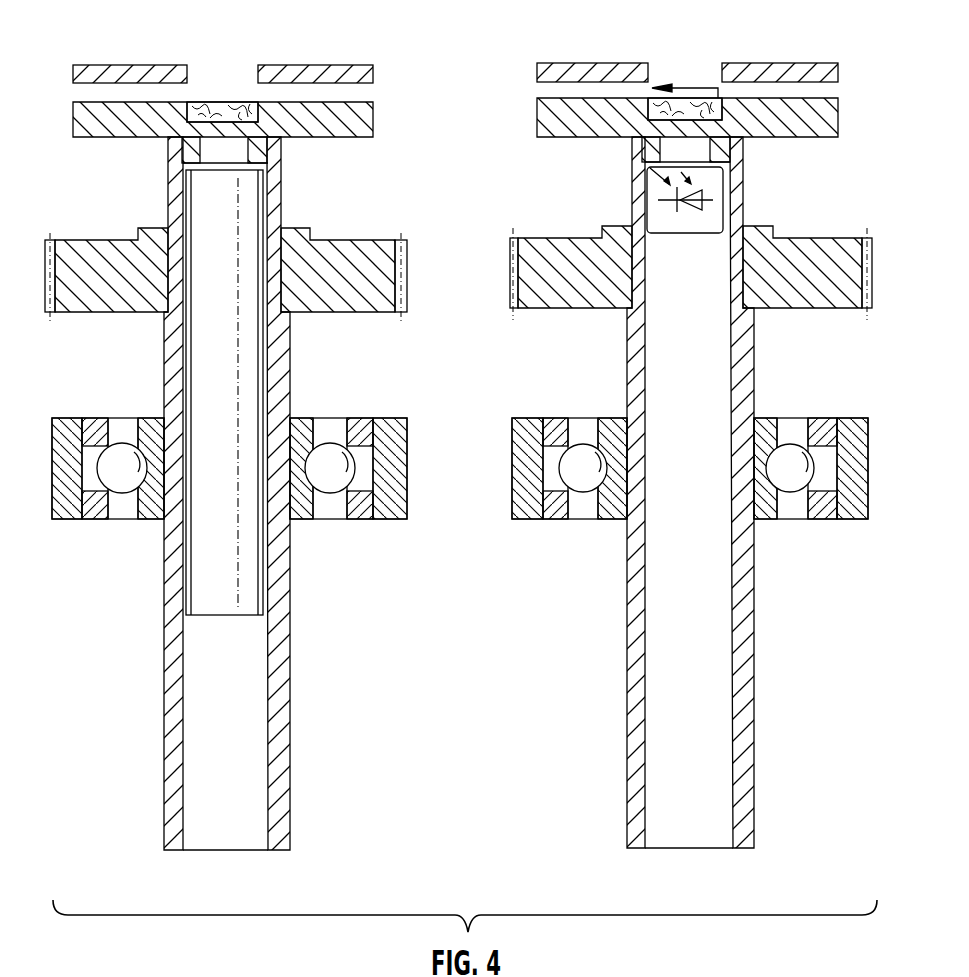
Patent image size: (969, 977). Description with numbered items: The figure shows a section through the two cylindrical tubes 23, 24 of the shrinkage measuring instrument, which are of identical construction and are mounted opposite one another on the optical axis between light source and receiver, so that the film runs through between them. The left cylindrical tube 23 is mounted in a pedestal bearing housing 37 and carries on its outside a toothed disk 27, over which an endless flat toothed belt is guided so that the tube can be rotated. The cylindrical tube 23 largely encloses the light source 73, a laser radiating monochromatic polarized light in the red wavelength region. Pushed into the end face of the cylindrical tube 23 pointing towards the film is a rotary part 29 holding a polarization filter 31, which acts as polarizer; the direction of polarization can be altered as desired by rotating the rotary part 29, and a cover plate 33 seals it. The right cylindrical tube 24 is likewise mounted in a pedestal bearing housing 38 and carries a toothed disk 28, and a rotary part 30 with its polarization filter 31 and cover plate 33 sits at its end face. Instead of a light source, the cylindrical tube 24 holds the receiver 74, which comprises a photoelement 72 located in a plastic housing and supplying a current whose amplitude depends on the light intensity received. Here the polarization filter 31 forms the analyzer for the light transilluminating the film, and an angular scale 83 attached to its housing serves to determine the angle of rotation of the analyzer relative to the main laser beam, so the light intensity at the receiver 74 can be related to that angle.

The cylindrical tube 23 is at (172, 700).
The cylindrical tube 24 is at (637, 672).
The toothed disk 27 is at (106, 302).
The toothed disk 28 is at (847, 298).
The rotary part 29 is at (130, 138).
The rotary part 30 is at (830, 138).
The polarization filter 31 is at (224, 102).
The cover plate 33 is at (325, 66).
The pedestal bearing housing 37 is at (72, 514).
The pedestal bearing housing 38 is at (858, 512).
The photoelement 72 is at (697, 208).
The light source 73 is at (258, 598).
The receiver 74 is at (658, 210).
The angular scale 83 is at (663, 86).